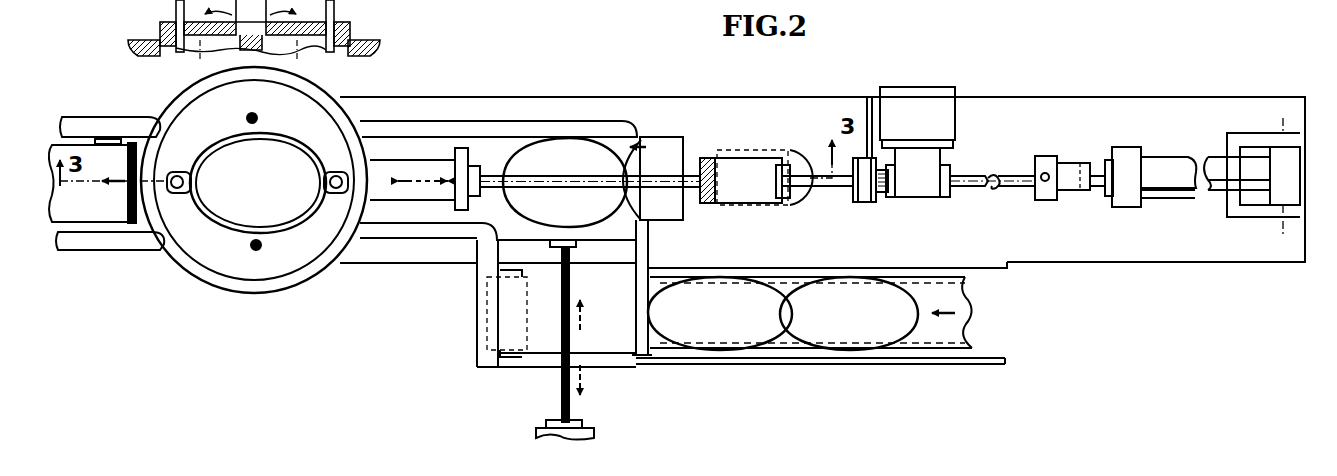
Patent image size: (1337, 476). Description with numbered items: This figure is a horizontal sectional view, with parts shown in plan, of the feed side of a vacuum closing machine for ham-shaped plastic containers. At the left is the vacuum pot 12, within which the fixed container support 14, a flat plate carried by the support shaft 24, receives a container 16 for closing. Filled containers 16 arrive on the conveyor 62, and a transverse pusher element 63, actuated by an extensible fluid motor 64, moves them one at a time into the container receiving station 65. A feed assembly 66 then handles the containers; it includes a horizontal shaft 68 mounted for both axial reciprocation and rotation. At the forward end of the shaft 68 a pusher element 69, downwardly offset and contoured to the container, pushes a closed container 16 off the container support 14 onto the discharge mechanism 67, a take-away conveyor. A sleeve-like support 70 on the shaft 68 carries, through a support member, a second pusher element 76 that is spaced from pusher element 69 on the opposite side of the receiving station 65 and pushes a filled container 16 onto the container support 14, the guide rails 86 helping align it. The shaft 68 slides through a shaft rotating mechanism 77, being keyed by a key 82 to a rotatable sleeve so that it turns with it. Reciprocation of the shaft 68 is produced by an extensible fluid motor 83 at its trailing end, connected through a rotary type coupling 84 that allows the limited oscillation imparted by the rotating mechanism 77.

The vacuum pot 12 is at (283, 292).
The container support 14 is at (226, 206).
The container 16 is at (572, 142).
The support shaft 24 is at (262, 98).
The conveyor 62 is at (974, 286).
The transverse pusher element 63 is at (646, 258).
The extensible fluid motor 64 is at (590, 432).
The container receiving station 65 is at (520, 156).
The feed assembly 66 is at (994, 174).
The discharge mechanism 67 is at (110, 152).
The shaft 68 is at (830, 188).
The pusher element 69 is at (455, 205).
The sleeve-like support 70 is at (752, 196).
The pusher element 76 is at (660, 140).
The shaft rotating mechanism 77 is at (934, 108).
The key 82 is at (1016, 180).
The extensible fluid motor 83 is at (1170, 166).
The rotary type coupling 84 is at (1070, 166).
The guide rails 86 is at (406, 132).